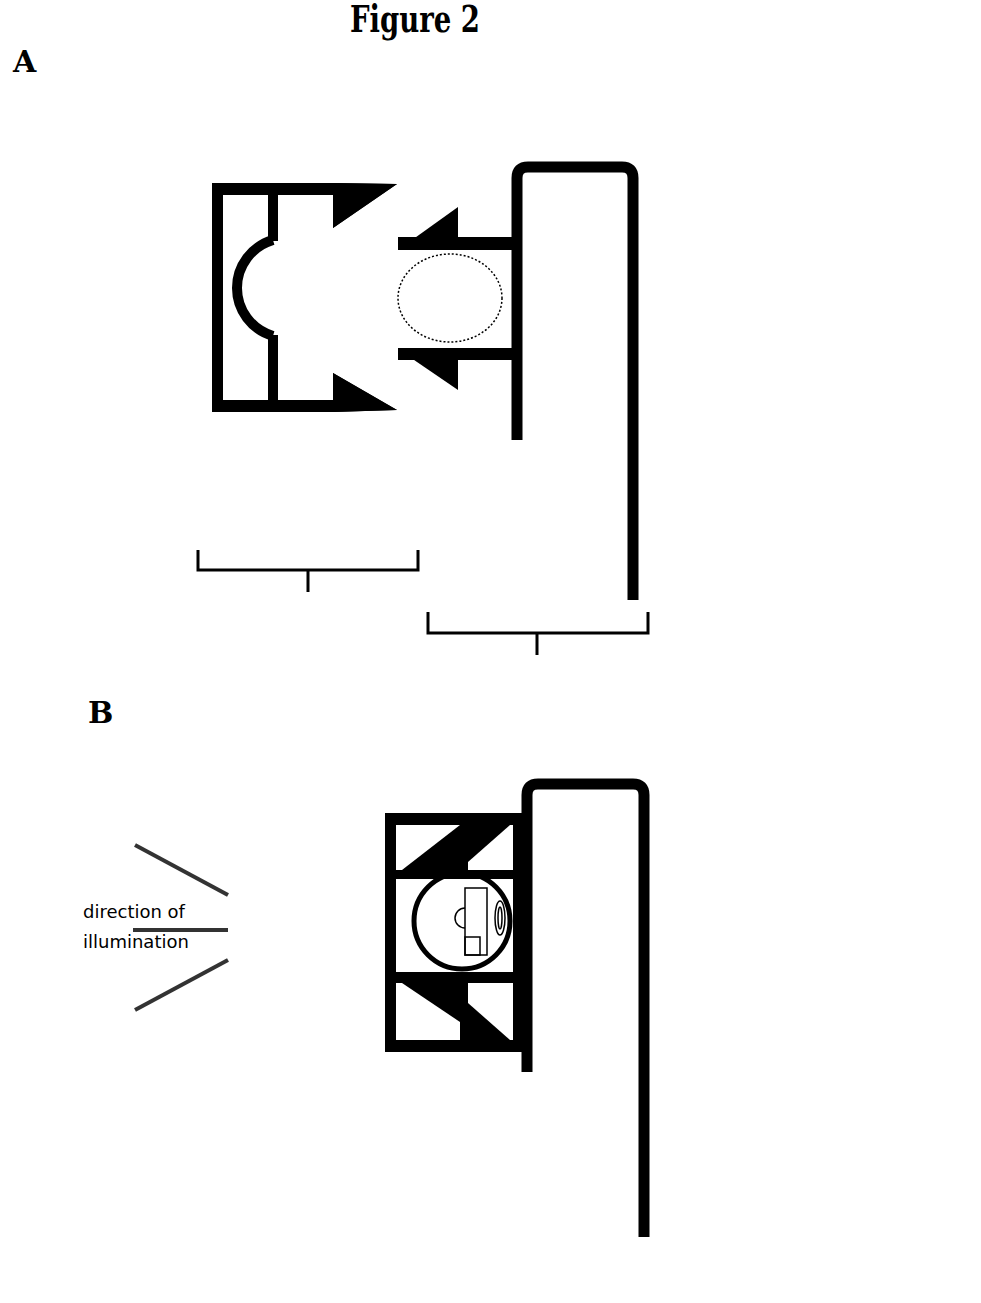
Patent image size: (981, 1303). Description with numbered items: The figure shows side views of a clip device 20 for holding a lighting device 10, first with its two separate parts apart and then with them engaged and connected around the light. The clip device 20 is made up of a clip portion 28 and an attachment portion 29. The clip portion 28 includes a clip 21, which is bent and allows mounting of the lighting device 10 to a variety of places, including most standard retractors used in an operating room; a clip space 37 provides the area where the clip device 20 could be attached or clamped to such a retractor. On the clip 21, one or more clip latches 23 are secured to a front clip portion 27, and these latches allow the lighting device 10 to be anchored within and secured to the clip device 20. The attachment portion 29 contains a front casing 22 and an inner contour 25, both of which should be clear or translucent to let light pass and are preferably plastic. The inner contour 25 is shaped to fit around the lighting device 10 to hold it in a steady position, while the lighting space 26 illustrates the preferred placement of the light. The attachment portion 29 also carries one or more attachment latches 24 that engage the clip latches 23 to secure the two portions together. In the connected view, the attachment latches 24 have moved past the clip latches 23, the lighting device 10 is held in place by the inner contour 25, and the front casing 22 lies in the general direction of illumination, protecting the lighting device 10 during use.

The lighting device 10 is at (400, 920).
The clip device 20 is at (345, 611).
The clip 21 is at (652, 242).
The front casing 22 is at (200, 230).
The clip latch 23 is at (456, 196).
The attachment latch 24 is at (372, 172).
The inner contour 25 is at (256, 347).
The lighting space 26 is at (383, 297).
The front clip portion 27 is at (535, 320).
The clip portion 28 is at (538, 648).
The attachment portion 29 is at (308, 585).
The clip space 37 is at (588, 998).